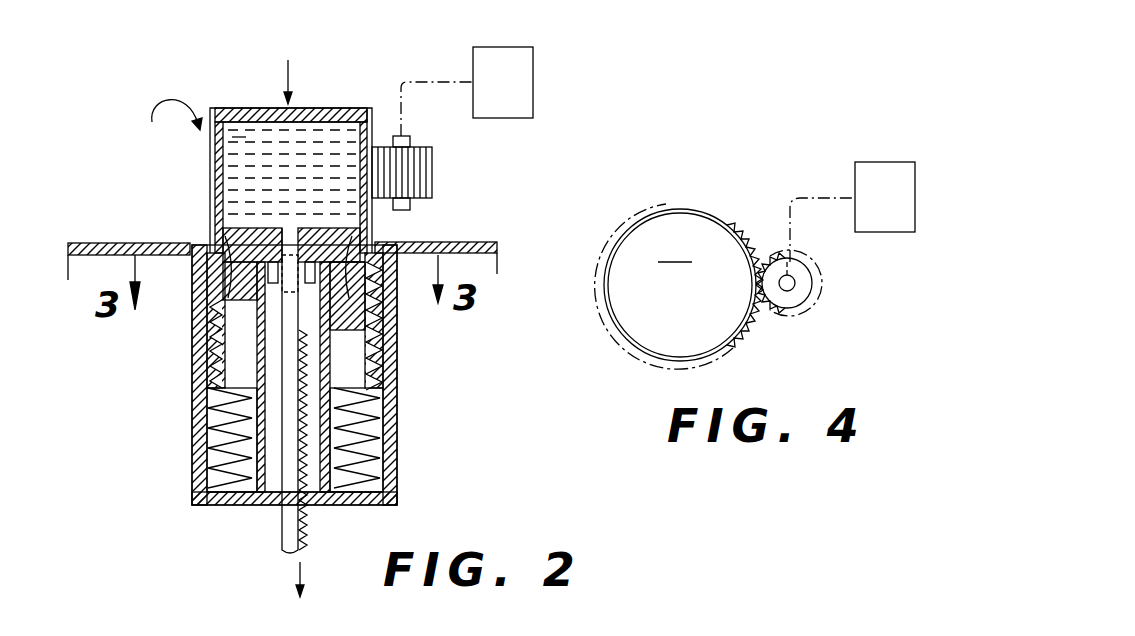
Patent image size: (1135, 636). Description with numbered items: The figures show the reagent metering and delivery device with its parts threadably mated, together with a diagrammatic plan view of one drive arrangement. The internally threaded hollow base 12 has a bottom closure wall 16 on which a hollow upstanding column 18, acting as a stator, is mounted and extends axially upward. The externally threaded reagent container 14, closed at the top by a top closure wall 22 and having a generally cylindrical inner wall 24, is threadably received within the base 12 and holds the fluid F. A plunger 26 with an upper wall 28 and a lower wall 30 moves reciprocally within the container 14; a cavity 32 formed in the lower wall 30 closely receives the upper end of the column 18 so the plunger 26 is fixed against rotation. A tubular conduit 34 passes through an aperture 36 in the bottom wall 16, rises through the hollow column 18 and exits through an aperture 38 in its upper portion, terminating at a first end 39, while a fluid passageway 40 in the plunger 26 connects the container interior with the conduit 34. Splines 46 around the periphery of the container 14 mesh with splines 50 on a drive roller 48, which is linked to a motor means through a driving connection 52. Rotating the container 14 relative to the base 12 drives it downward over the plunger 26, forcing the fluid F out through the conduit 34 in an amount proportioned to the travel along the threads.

In FIG. 2, the hollow base 12 is at (184, 447).
In FIG. 2, the reagent container 14 is at (200, 154).
In FIG. 4, the reagent container 14 is at (690, 177).
In FIG. 2, the bottom closure wall 16 is at (210, 507).
In FIG. 2, the upstanding column 18 is at (327, 410).
In FIG. 2, the top closure wall 22 is at (318, 108).
In FIG. 4, the top closure wall 22 is at (680, 285).
In FIG. 2, the inner wall 24 is at (223, 183).
In FIG. 2, the plunger 26 is at (243, 283).
In FIG. 2, the upper wall 28 is at (303, 227).
In FIG. 2, the lower wall 30 is at (215, 320).
In FIG. 2, the cavity 32 is at (330, 290).
In FIG. 2, the tubular conduit 34 is at (283, 542).
In FIG. 2, the aperture 36 is at (308, 505).
In FIG. 2, the aperture 38 is at (298, 262).
In FIG. 2, the first end 39 is at (350, 240).
In FIG. 2, the fluid passageway 40 is at (285, 230).
In FIG. 2, the splines 46 is at (383, 95).
In FIG. 4, the splines 46 is at (733, 223).
In FIG. 2, the drive roller 48 is at (432, 157).
In FIG. 4, the drive roller 48 is at (803, 290).
In FIG. 2, the splines 50 is at (432, 180).
In FIG. 4, the splines 50 is at (782, 313).
In FIG. 2, the driving connection 52 is at (433, 82).
In FIG. 4, the driving connection 52 is at (803, 197).
In FIG. 2, the fluid F is at (237, 137).